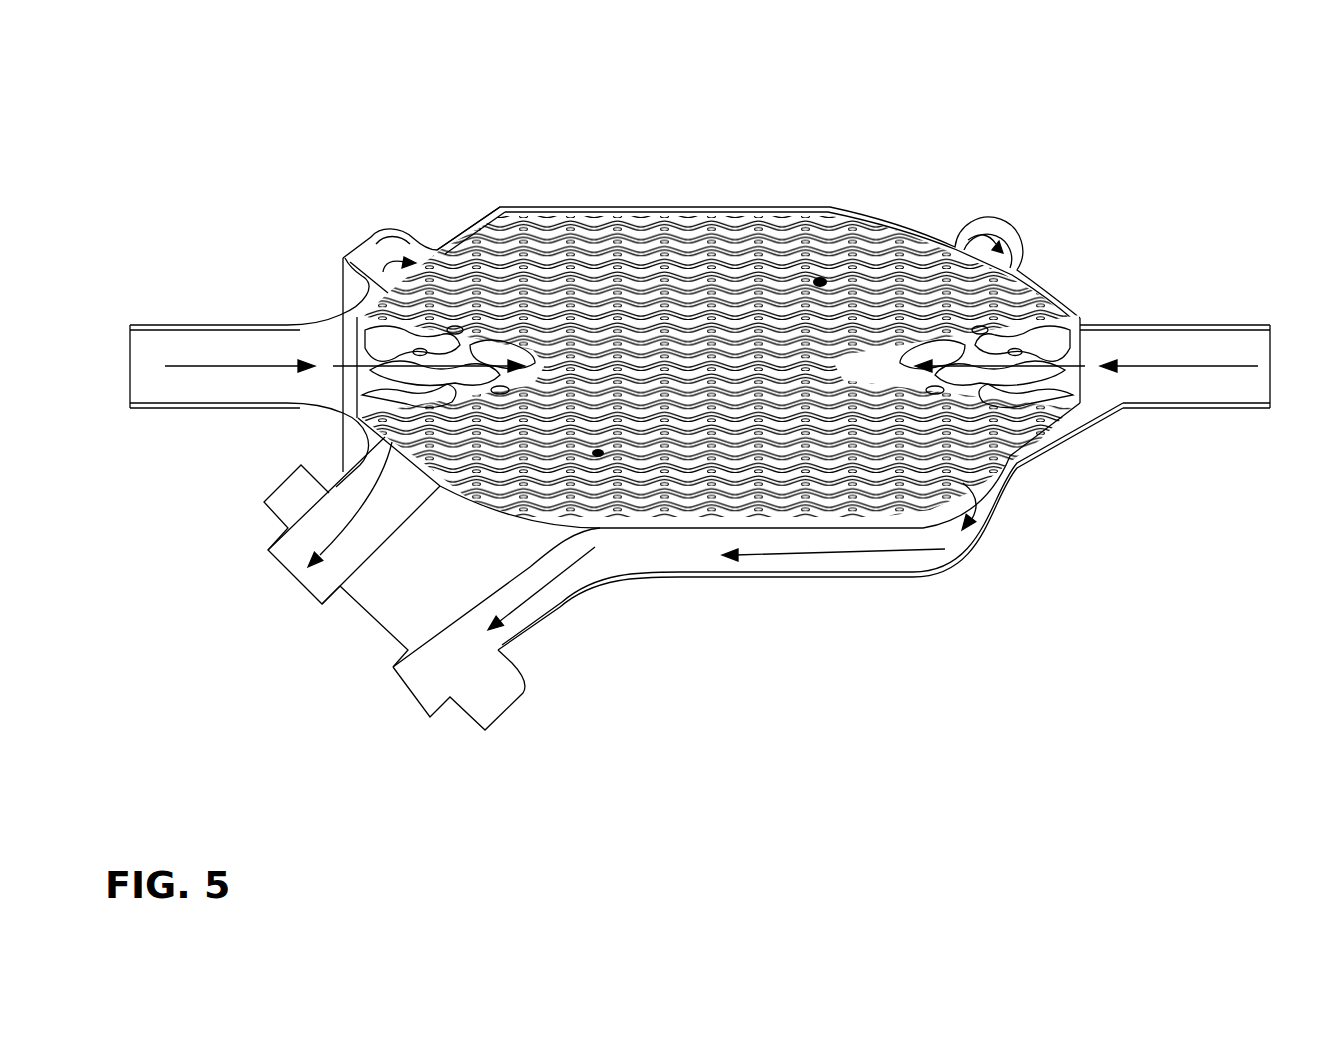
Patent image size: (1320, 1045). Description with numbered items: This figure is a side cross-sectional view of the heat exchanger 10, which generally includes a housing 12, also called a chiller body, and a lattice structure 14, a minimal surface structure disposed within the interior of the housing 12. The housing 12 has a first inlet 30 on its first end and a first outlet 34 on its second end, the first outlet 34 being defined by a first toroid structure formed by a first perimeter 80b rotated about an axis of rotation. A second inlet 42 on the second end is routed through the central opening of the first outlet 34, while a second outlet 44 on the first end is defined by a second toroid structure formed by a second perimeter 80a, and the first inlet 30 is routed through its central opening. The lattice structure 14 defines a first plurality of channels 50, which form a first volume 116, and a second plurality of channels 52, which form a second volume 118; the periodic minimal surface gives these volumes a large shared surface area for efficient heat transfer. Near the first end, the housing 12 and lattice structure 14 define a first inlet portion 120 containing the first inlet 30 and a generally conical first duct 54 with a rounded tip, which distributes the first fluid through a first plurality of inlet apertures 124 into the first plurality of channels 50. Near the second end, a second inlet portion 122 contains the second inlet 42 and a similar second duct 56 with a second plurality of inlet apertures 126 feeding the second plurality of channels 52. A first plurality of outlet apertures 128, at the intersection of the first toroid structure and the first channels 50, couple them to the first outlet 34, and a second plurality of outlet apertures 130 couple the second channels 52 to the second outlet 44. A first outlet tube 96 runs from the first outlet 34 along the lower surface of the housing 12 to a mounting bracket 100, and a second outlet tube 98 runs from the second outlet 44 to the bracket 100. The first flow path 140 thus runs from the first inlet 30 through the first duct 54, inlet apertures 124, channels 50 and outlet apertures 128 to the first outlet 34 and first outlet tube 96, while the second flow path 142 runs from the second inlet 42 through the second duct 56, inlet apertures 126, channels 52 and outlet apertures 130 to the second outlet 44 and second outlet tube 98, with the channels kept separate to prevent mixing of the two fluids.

The heat exchanger 10 is at (1152, 148).
The housing 12 is at (1005, 553).
The lattice structure 14 is at (771, 203).
The first inlet 30 is at (228, 323).
The first outlet 34 is at (1023, 237).
The second inlet 42 is at (1220, 328).
The second outlet 44 is at (367, 245).
The first plurality of channels 50 is at (820, 252).
The second plurality of channels 52 is at (510, 283).
The first duct 54 is at (365, 328).
The second duct 56 is at (1047, 318).
The second perimeter 80a is at (410, 236).
The first perimeter 80b is at (987, 222).
The first outlet tube 96 is at (718, 582).
The second outlet tube 98 is at (333, 485).
The mounting bracket 100 is at (513, 700).
The first volume 116 is at (925, 495).
The second volume 118 is at (343, 590).
The first inlet portion 120 is at (150, 338).
The second inlet portion 122 is at (1130, 335).
The first plurality of inlet apertures 124 is at (357, 387).
The second plurality of inlet apertures 126 is at (1037, 383).
The first plurality of outlet apertures 128 is at (1010, 273).
The second plurality of outlet apertures 130 is at (463, 260).
The first flow path 140 is at (670, 275).
The second flow path 142 is at (382, 245).